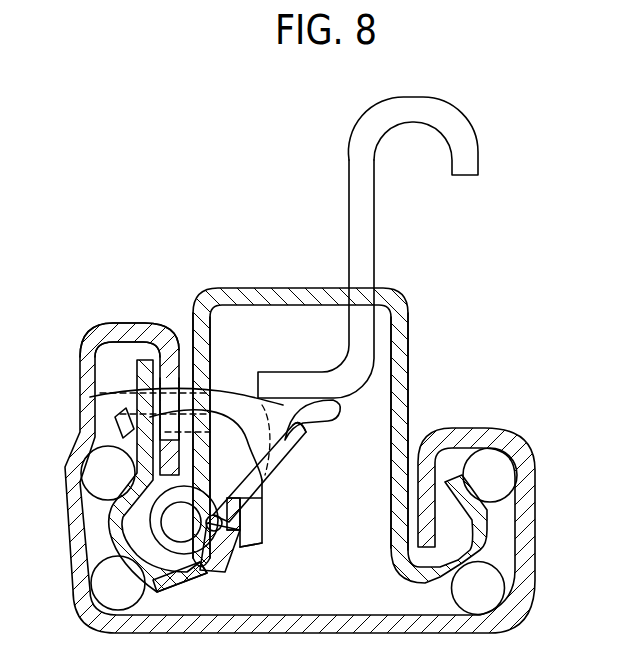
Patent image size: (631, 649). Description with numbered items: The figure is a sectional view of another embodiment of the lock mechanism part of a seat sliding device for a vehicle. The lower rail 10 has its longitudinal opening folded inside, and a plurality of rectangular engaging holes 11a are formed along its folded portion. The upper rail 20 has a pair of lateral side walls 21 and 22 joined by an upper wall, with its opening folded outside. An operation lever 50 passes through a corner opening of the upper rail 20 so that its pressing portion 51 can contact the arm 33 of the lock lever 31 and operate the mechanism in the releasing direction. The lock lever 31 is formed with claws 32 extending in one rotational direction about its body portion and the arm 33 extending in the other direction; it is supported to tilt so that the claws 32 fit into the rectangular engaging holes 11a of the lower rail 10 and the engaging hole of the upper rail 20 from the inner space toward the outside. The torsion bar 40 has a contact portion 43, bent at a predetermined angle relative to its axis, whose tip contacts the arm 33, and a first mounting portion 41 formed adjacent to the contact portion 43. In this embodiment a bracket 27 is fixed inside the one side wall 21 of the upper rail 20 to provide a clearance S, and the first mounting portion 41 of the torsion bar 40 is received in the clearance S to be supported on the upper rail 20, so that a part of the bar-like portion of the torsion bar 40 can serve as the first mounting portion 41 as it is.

The lower rail 10 is at (498, 421).
The rectangular engaging holes 11a is at (188, 377).
The upper rail 20 is at (307, 388).
The side wall 21 is at (207, 308).
The side wall 22 is at (397, 392).
The bracket 27 is at (175, 587).
The lock lever 31 is at (248, 520).
The claws 32 is at (127, 409).
The arm 33 is at (320, 423).
The torsion bar 40 is at (270, 468).
The first mounting portion 41 is at (240, 520).
The contact portion 43 is at (308, 438).
The operation lever 50 is at (485, 127).
The pressing portion 51 is at (362, 235).
The clearance S is at (240, 553).